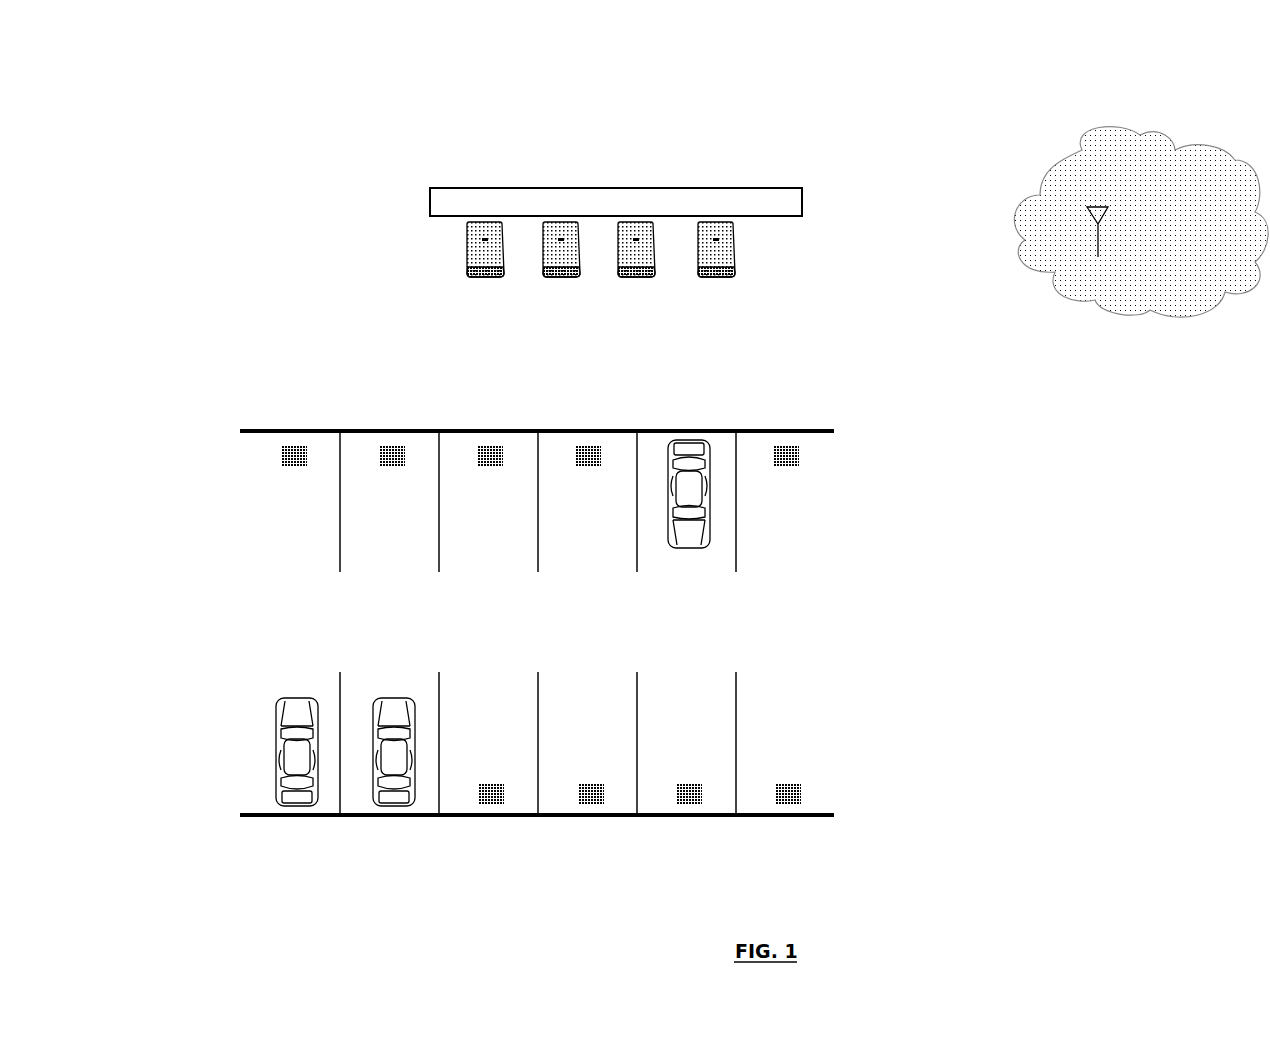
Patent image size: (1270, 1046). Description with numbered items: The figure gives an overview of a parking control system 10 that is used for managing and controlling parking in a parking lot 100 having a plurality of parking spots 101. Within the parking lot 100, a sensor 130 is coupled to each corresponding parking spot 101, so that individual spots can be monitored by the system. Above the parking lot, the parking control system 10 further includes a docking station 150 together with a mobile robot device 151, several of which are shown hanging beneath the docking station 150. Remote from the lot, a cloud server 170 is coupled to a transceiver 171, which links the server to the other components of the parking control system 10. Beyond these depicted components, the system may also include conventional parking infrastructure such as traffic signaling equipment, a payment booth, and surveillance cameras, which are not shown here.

The parking control system 10 is at (207, 127).
The parking lot 100 is at (238, 600).
The parking spot 101 is at (331, 444).
The sensor 130 is at (280, 449).
The docking station 150 is at (802, 190).
The mobile robot device 151 is at (735, 258).
The cloud server 170 is at (1088, 138).
The transceiver 171 is at (1095, 228).